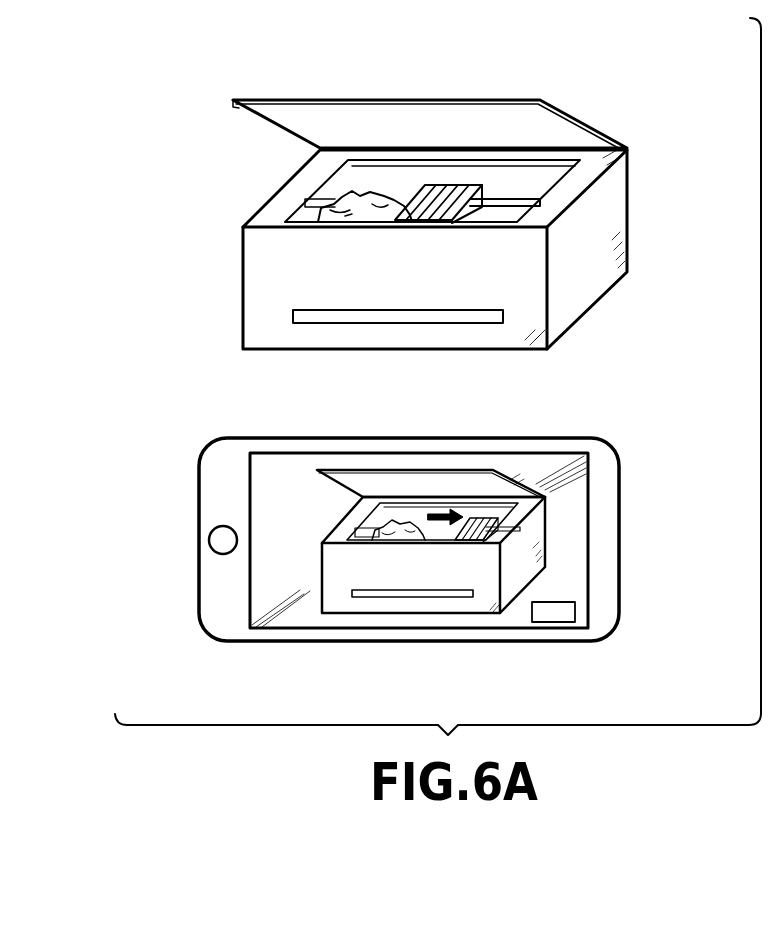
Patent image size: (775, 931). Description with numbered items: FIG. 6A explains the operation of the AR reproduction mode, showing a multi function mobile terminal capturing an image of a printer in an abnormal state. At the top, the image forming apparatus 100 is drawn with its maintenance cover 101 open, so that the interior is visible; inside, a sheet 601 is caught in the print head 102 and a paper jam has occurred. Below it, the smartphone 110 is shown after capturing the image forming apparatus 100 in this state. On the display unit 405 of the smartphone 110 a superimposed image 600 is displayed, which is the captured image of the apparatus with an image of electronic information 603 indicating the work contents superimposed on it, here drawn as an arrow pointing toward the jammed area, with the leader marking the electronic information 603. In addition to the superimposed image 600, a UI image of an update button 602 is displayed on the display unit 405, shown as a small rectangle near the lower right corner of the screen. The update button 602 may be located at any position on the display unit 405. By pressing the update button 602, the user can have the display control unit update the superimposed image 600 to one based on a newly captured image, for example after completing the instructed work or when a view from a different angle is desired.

The image forming apparatus 100 is at (592, 120).
The maintenance cover 101 is at (253, 102).
The print head 102 is at (468, 185).
The sheet 601 is at (355, 207).
The smartphone 110 is at (200, 452).
The superimposed image 600 is at (560, 485).
The display unit 405 is at (588, 535).
The update button 602 is at (560, 607).
The electronic information 603 is at (433, 520).